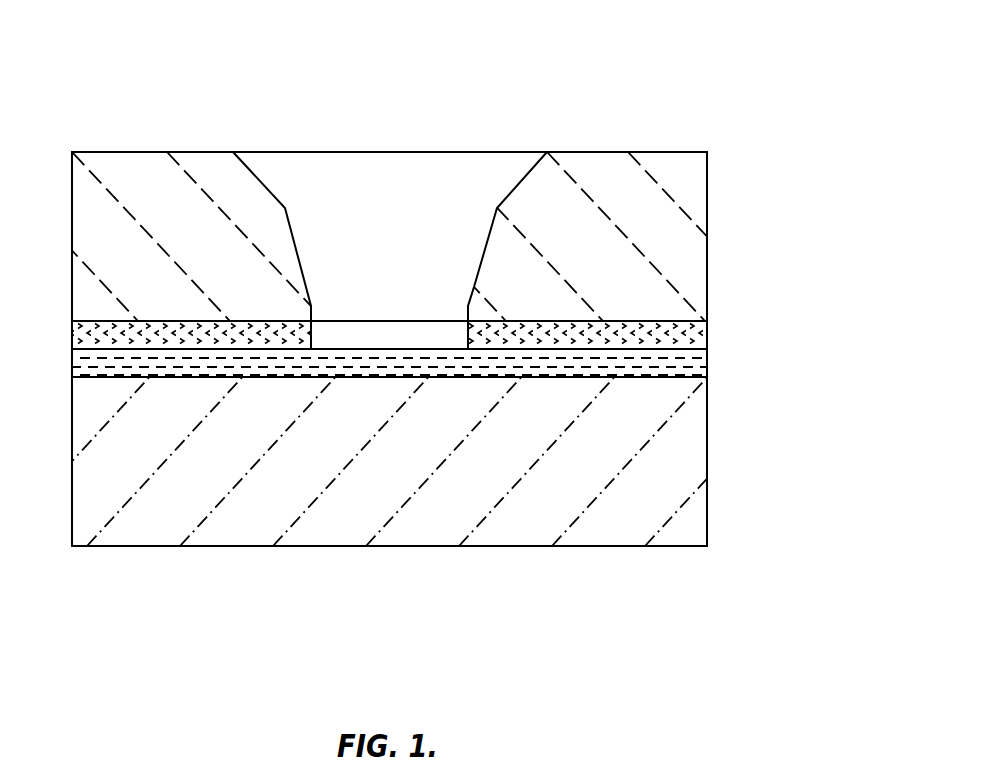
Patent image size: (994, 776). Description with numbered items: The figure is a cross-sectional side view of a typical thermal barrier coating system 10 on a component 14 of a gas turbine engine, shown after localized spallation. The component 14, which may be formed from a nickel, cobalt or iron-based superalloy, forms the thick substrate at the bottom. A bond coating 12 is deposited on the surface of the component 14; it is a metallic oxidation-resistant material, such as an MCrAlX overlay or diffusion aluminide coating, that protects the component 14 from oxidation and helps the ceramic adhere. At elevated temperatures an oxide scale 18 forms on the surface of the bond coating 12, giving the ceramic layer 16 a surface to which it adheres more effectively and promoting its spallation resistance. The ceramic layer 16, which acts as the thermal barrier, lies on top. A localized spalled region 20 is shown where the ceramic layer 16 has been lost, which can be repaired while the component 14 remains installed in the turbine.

The thermal barrier coating system 10 is at (451, 286).
The bond coating 12 is at (474, 328).
The component 14 is at (438, 461).
The ceramic layer 16 is at (439, 236).
The oxide scale 18 is at (474, 300).
The spalled region 20 is at (393, 222).